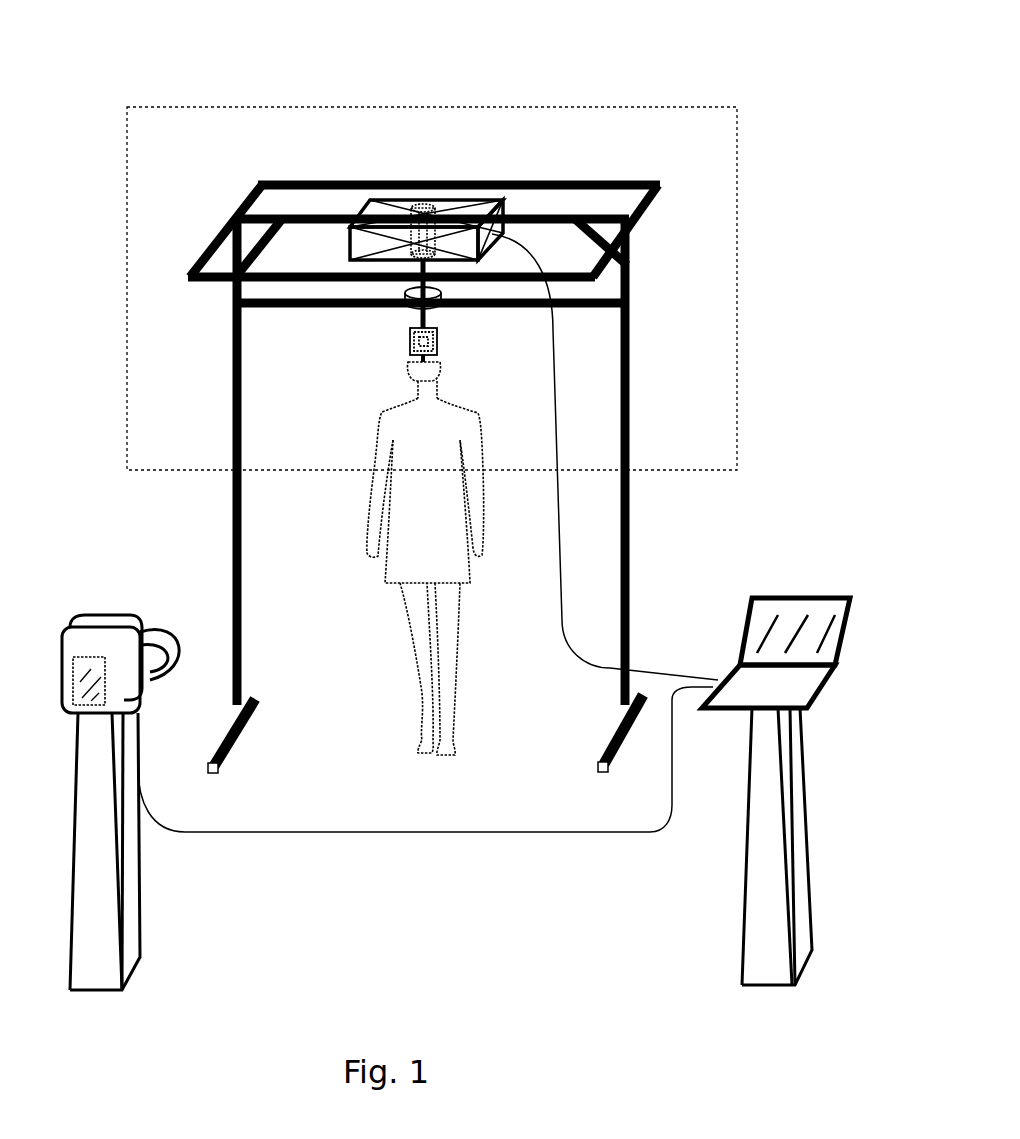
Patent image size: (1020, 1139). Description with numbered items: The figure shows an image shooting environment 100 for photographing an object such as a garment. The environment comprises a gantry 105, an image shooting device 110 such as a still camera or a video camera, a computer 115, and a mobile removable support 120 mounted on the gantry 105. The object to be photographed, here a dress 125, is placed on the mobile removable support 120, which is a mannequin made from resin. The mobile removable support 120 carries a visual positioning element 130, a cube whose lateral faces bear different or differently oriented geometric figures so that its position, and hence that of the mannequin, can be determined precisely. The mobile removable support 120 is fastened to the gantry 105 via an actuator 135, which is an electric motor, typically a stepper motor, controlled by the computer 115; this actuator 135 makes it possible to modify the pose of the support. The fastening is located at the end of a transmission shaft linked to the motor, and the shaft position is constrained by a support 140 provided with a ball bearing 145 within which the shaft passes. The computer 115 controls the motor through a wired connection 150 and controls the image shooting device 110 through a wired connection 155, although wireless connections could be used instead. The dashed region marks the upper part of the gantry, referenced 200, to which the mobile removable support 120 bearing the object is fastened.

The image shooting environment 100 is at (122, 54).
The gantry 105 is at (635, 420).
The image shooting device 110 is at (112, 612).
The computer 115 is at (780, 597).
The mobile removable support 120 is at (410, 613).
The dress 125 is at (460, 573).
The visual positioning element 130 is at (442, 343).
The actuator 135 is at (475, 195).
The support 140 is at (468, 303).
The ball bearing 145 is at (408, 308).
The wired connection 150 is at (653, 668).
The wired connection 155 is at (487, 833).
The upper part of the gantry 200 is at (737, 218).